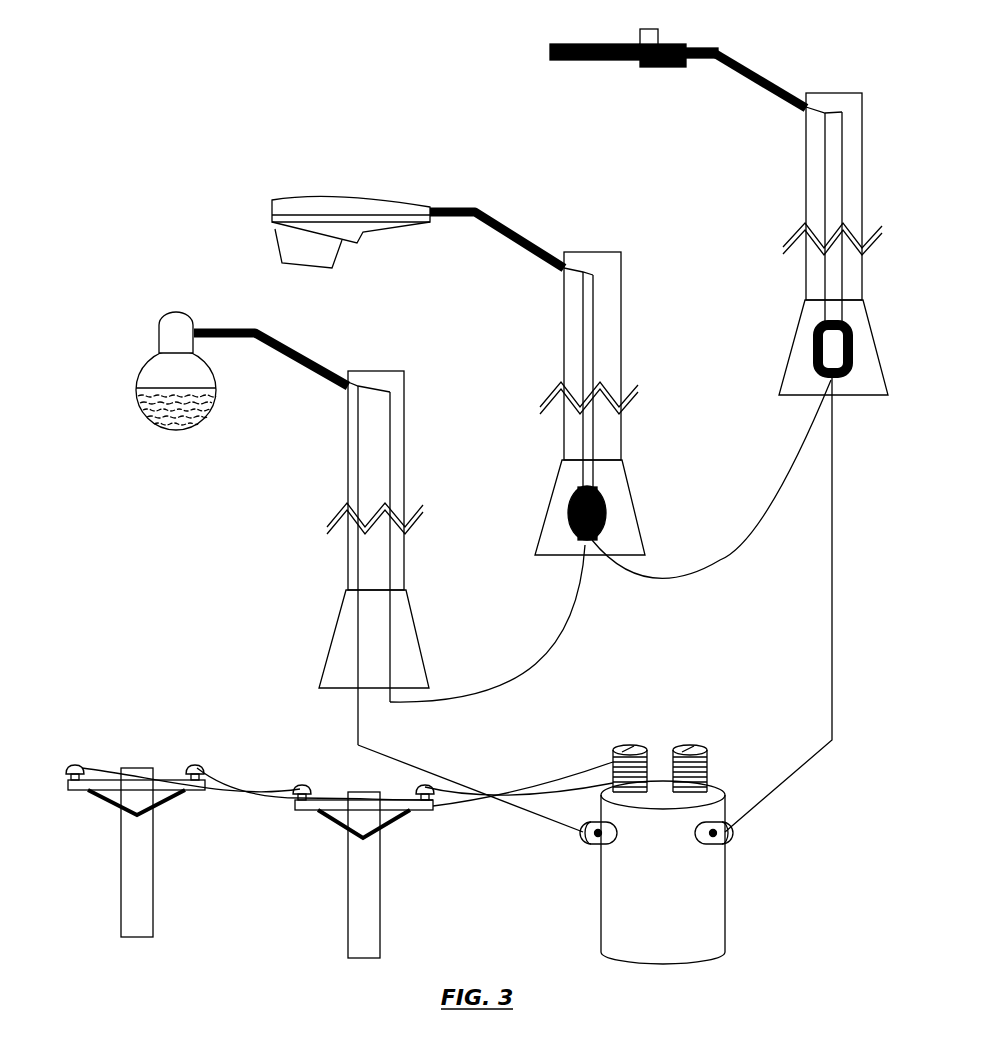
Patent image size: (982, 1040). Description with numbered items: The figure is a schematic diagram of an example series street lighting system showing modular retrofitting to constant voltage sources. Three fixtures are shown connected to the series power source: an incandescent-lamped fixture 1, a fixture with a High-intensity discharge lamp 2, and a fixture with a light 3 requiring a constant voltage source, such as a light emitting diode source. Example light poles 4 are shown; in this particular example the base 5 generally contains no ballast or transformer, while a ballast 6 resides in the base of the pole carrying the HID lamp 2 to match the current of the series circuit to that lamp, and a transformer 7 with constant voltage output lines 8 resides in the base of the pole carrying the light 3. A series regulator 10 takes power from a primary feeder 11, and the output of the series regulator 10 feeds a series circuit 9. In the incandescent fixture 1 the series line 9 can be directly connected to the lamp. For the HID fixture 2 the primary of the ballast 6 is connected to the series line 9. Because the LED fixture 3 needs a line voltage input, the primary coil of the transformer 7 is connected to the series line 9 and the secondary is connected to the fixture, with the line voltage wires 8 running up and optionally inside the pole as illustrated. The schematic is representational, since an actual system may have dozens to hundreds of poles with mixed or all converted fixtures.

The incandescent-lamped fixture 1 is at (190, 371).
The HID lamp fixture 2 is at (365, 225).
The LED light fixture 3 is at (623, 63).
The light poles 4 is at (332, 558).
The base 5 is at (326, 639).
The ballast 6 is at (536, 513).
The transformer 7 is at (777, 356).
The constant voltage output lines 8 is at (801, 207).
The series circuit 9 is at (595, 605).
The series regulator 10 is at (705, 872).
The primary feeder 11 is at (660, 717).